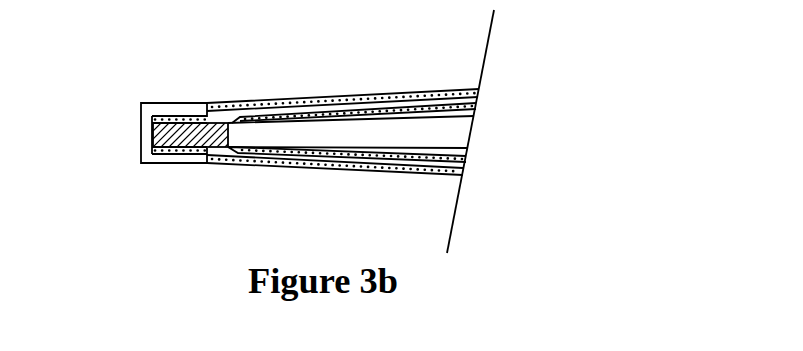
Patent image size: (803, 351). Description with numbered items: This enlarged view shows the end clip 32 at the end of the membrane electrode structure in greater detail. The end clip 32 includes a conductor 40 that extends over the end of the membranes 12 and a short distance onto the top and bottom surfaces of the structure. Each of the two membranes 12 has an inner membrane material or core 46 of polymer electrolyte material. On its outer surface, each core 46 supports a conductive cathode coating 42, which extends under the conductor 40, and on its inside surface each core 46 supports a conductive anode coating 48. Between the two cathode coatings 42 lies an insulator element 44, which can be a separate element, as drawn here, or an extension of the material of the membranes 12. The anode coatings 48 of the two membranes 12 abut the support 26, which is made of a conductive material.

The membrane 12 is at (403, 90).
The support 26 is at (442, 143).
The end clip 32 is at (143, 103).
The conductor 40 is at (147, 135).
The conductive cathode coating 42 is at (245, 101).
The insulator element 44 is at (182, 128).
The core 46 is at (332, 107).
The conductive anode coating 48 is at (445, 113).